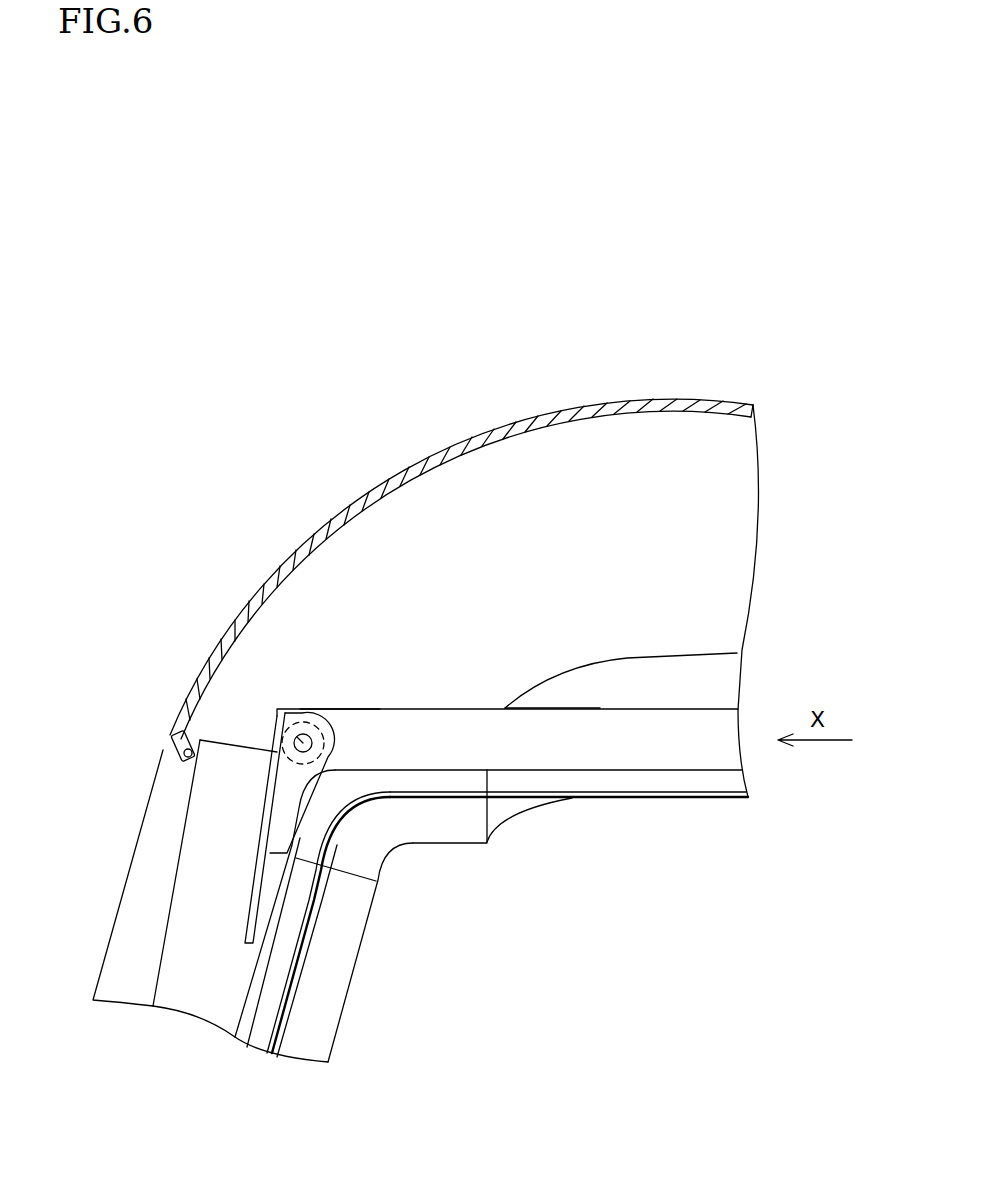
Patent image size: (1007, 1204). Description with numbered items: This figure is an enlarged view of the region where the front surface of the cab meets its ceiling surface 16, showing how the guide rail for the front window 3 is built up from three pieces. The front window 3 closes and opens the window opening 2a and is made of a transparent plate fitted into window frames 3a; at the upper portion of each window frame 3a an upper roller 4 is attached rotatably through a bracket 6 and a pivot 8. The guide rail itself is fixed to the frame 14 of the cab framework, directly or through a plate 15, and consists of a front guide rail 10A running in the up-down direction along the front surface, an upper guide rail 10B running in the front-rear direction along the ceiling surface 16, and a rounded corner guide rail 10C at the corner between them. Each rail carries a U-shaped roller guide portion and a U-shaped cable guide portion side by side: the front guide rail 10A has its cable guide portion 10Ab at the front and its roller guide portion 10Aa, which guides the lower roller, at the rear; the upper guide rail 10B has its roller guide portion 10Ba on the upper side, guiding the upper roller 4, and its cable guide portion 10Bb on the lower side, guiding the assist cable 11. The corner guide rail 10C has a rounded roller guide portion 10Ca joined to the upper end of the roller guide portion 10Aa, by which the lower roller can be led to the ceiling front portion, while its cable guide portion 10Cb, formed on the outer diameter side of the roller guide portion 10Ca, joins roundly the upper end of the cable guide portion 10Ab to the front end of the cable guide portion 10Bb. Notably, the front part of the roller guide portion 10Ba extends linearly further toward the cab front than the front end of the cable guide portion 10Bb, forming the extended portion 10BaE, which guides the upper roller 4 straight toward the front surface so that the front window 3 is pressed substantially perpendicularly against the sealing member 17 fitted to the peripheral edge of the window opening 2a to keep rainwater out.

The ceiling surface 16 is at (420, 465).
The frame 14 is at (655, 472).
The upper guide rail 10B is at (552, 708).
The roller guide portion 10Ba is at (608, 730).
The extended portion 10BaE is at (343, 738).
The plate 15 is at (685, 683).
The cable guide portion 10Bb is at (613, 780).
The assist cable 11 is at (707, 797).
The cable guide portion 10Cb is at (367, 797).
The corner guide rail 10C is at (432, 845).
The roller guide portion 10Ca is at (390, 835).
The front guide rail 10A is at (343, 1005).
The roller guide portion 10Aa is at (303, 1038).
The cable guide portion 10Ab is at (258, 1035).
The pivot 8 is at (290, 800).
The bracket 6 is at (293, 743).
The upper roller 4 is at (307, 715).
The sealing member 17 is at (172, 750).
The window opening 2a is at (140, 935).
The front window 3 is at (152, 990).
The window frame 3a is at (193, 988).